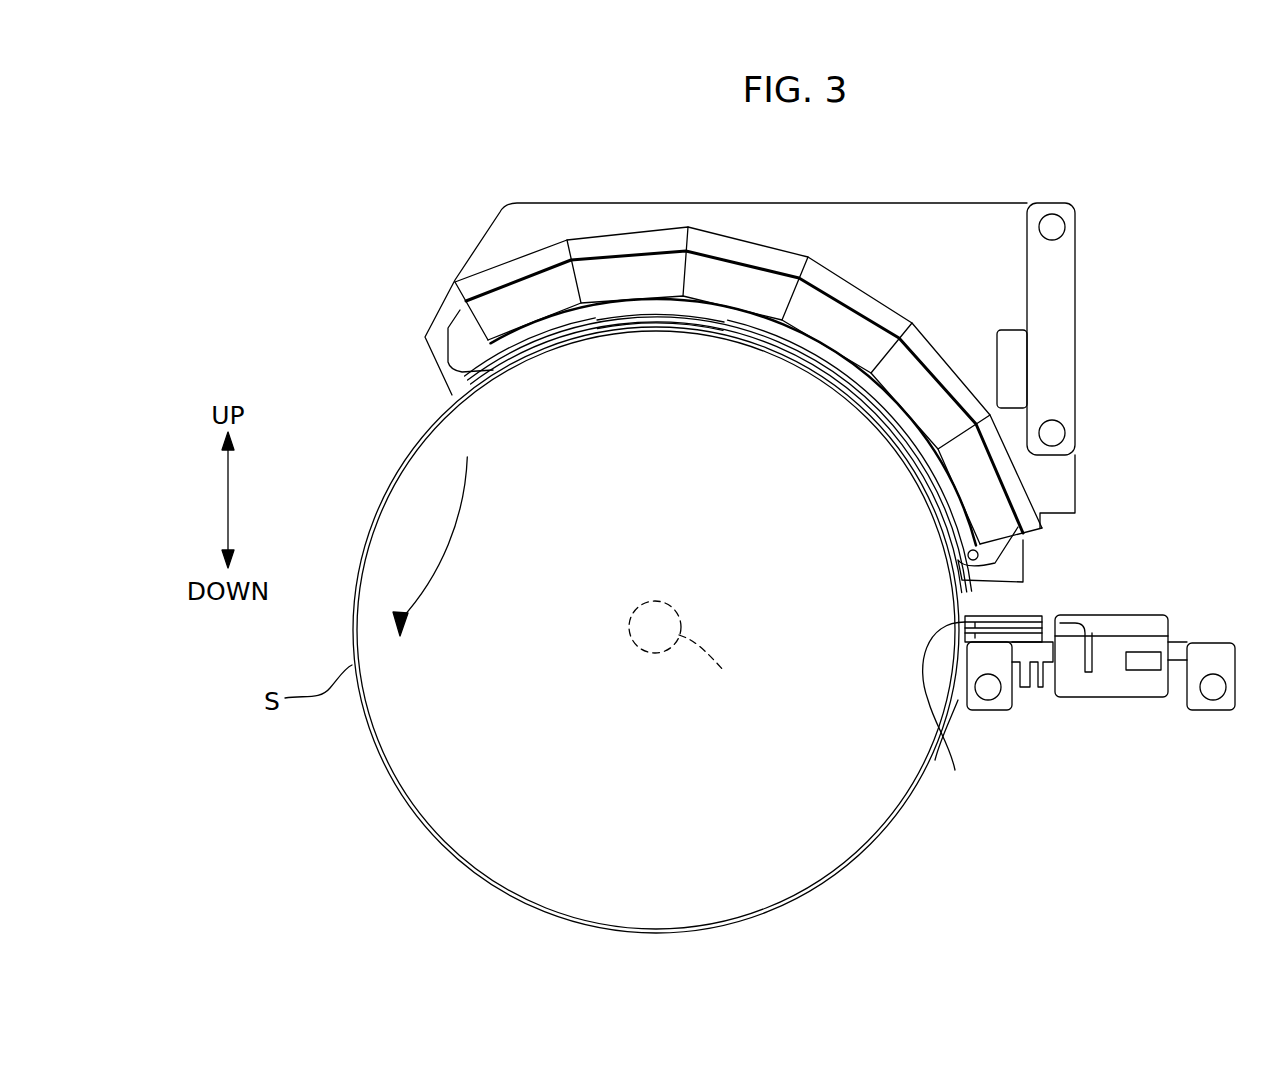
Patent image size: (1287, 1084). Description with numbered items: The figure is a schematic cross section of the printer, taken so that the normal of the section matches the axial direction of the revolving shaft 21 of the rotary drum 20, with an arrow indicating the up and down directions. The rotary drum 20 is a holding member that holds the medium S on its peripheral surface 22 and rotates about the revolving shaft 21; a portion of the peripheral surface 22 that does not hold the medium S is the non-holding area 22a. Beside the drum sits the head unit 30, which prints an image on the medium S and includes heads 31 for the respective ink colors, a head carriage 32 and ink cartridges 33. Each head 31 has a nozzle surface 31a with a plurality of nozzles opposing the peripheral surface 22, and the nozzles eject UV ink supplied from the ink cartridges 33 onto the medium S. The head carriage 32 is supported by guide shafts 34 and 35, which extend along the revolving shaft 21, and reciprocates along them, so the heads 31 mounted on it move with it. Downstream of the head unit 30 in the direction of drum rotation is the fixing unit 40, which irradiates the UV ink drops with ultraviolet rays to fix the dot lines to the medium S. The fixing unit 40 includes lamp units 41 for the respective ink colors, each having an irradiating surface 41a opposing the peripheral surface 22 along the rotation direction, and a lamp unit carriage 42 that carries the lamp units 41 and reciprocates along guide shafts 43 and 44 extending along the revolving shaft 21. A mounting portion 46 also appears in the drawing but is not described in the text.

The rotary drum 20 is at (443, 858).
The revolving shaft 21 is at (697, 645).
The peripheral surface 22 is at (863, 868).
The non-holding area 22a is at (723, 330).
The head unit 30 is at (1066, 728).
The head 31 is at (1030, 615).
The nozzle surface 31a is at (940, 760).
The head carriage 32 is at (1115, 680).
The ink cartridge 33 is at (1145, 618).
The guide shaft 34 is at (1143, 666).
The guide shaft 35 is at (988, 700).
The fixing unit 40 is at (889, 188).
The lamp unit 41 is at (496, 264).
The irradiating surface 41a is at (540, 325).
The lamp unit carriage 42 is at (960, 203).
The guide shaft 43 is at (1065, 436).
The guide shaft 44 is at (1065, 229).
The fixing portion 46 is at (1213, 700).